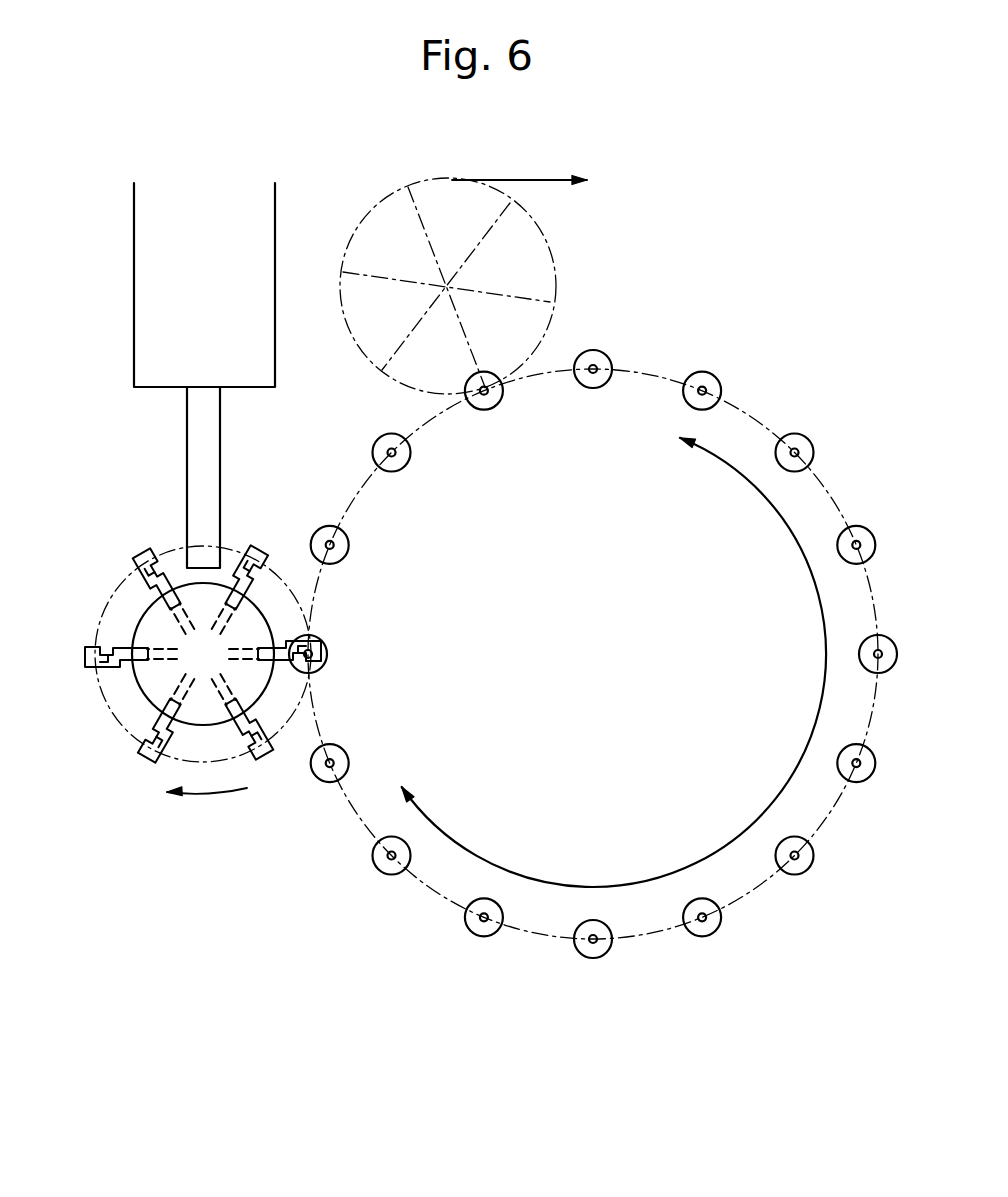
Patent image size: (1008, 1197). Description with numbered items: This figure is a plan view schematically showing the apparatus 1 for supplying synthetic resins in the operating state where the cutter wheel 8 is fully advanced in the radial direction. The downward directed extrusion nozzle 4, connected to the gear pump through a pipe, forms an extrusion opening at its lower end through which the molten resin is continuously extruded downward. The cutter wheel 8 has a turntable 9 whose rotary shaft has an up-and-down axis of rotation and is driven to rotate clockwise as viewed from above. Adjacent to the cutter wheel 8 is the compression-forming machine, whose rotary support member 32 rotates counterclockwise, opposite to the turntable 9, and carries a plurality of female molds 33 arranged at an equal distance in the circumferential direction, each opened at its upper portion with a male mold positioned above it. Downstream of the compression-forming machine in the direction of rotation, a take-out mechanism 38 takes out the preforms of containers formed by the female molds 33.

The apparatus for supplying synthetic resins 1 is at (120, 487).
The extrusion nozzle 4 is at (221, 466).
The cutter wheel 8 is at (85, 688).
The turntable 9 is at (148, 690).
The rotary support member 32 is at (607, 672).
The female mold 33 is at (326, 645).
The take-out mechanism 38 is at (545, 242).